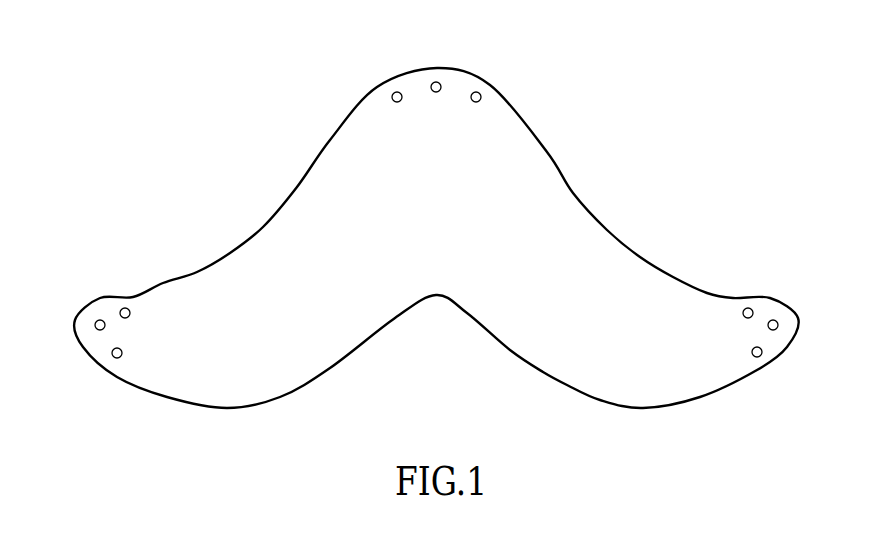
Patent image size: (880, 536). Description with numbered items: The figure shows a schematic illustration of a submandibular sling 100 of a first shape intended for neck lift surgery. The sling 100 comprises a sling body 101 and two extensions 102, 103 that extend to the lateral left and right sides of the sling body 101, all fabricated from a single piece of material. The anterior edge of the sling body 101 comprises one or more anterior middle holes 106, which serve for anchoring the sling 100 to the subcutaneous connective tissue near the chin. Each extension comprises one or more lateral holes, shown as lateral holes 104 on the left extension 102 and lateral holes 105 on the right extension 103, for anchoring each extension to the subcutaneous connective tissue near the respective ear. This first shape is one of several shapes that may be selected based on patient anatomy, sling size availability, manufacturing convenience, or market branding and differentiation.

The sling 100 is at (307, 118).
The sling body 101 is at (444, 202).
The extension 102 is at (255, 307).
The extension 103 is at (605, 293).
The lateral holes 104 is at (113, 325).
The lateral holes 105 is at (763, 308).
The anterior middle holes 106 is at (437, 68).